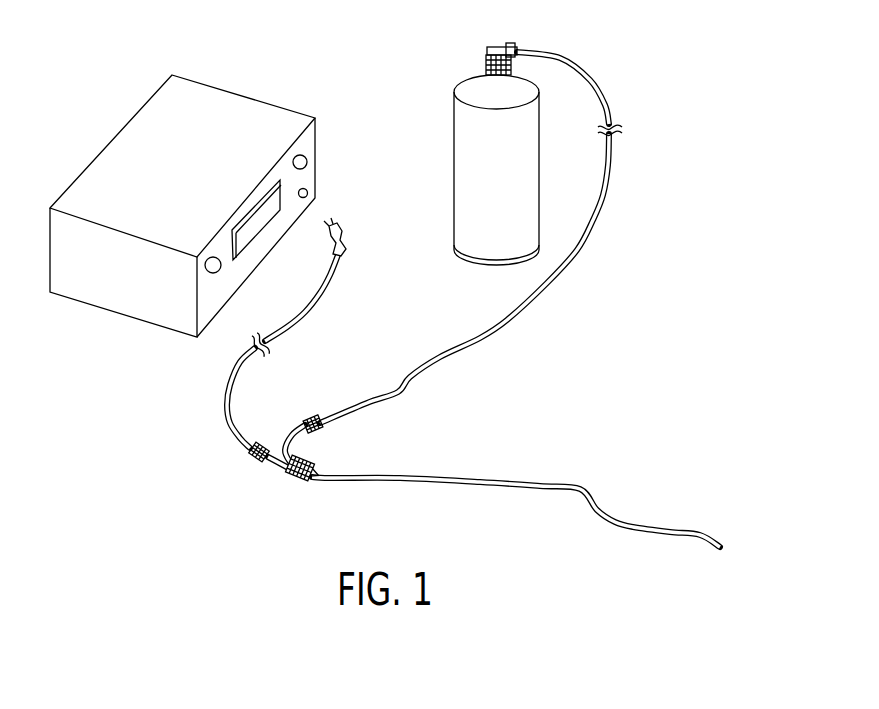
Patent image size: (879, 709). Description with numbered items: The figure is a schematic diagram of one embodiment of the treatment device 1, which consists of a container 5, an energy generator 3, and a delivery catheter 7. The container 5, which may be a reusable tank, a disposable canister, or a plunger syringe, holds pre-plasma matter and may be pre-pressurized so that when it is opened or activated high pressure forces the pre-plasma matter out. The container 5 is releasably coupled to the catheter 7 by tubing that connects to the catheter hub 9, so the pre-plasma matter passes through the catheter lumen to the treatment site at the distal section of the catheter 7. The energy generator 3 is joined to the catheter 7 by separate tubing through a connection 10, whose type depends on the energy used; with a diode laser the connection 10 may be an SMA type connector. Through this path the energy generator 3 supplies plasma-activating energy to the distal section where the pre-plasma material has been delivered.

The treatment device 1 is at (652, 40).
The energy generator 3 is at (118, 101).
The container 5 is at (443, 119).
The delivery catheter 7 is at (581, 486).
The hub 9 is at (310, 484).
The connection 10 is at (344, 230).